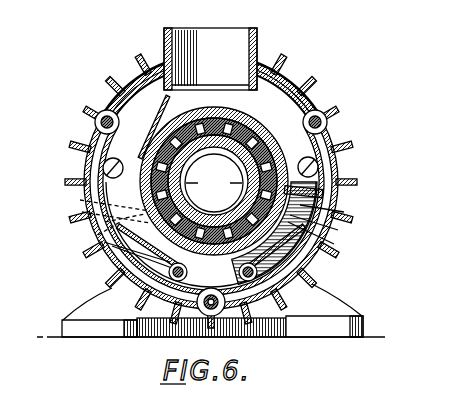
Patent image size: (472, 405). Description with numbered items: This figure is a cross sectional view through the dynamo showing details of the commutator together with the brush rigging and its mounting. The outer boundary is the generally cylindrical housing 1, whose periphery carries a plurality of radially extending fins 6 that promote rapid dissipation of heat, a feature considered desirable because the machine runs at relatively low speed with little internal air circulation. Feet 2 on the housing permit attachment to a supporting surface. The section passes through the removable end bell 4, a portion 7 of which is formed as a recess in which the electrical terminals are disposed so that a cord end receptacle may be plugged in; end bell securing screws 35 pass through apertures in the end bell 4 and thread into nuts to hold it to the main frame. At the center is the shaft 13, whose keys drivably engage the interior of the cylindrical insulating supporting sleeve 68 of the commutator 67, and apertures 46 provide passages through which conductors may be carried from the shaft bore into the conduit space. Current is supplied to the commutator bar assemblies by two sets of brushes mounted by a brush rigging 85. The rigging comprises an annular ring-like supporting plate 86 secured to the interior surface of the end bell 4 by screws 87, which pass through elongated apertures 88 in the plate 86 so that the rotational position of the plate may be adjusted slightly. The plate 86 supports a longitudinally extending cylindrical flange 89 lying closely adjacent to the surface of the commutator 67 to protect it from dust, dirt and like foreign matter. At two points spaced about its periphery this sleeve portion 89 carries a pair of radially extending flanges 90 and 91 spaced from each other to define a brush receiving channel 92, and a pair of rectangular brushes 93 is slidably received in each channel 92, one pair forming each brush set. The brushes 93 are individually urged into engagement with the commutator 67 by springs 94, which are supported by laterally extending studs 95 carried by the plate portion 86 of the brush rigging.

The housing 1 is at (323, 92).
The feet 2 is at (70, 333).
The removable end bell 4 is at (334, 118).
The fins 6 is at (311, 76).
The recess portion of end bell 7 is at (257, 60).
The shaft 13 is at (224, 193).
The end bell securing screws 35 is at (204, 318).
The ports or apertures 46 is at (234, 176).
The commutator 67 is at (305, 147).
The supporting sleeve 68 is at (268, 127).
The brush rigging 85 is at (340, 140).
The supporting plate 86 is at (140, 258).
The screws 87 is at (82, 170).
The elongated apertures 88 is at (117, 160).
The cylindrical flange 89 is at (160, 127).
The radially extending flange 90 is at (78, 203).
The radially extending flange 91 is at (104, 242).
The brush receiving channel 92 is at (105, 222).
The brushes 93 is at (112, 246).
The springs 94 is at (143, 248).
The studs 95 is at (186, 272).